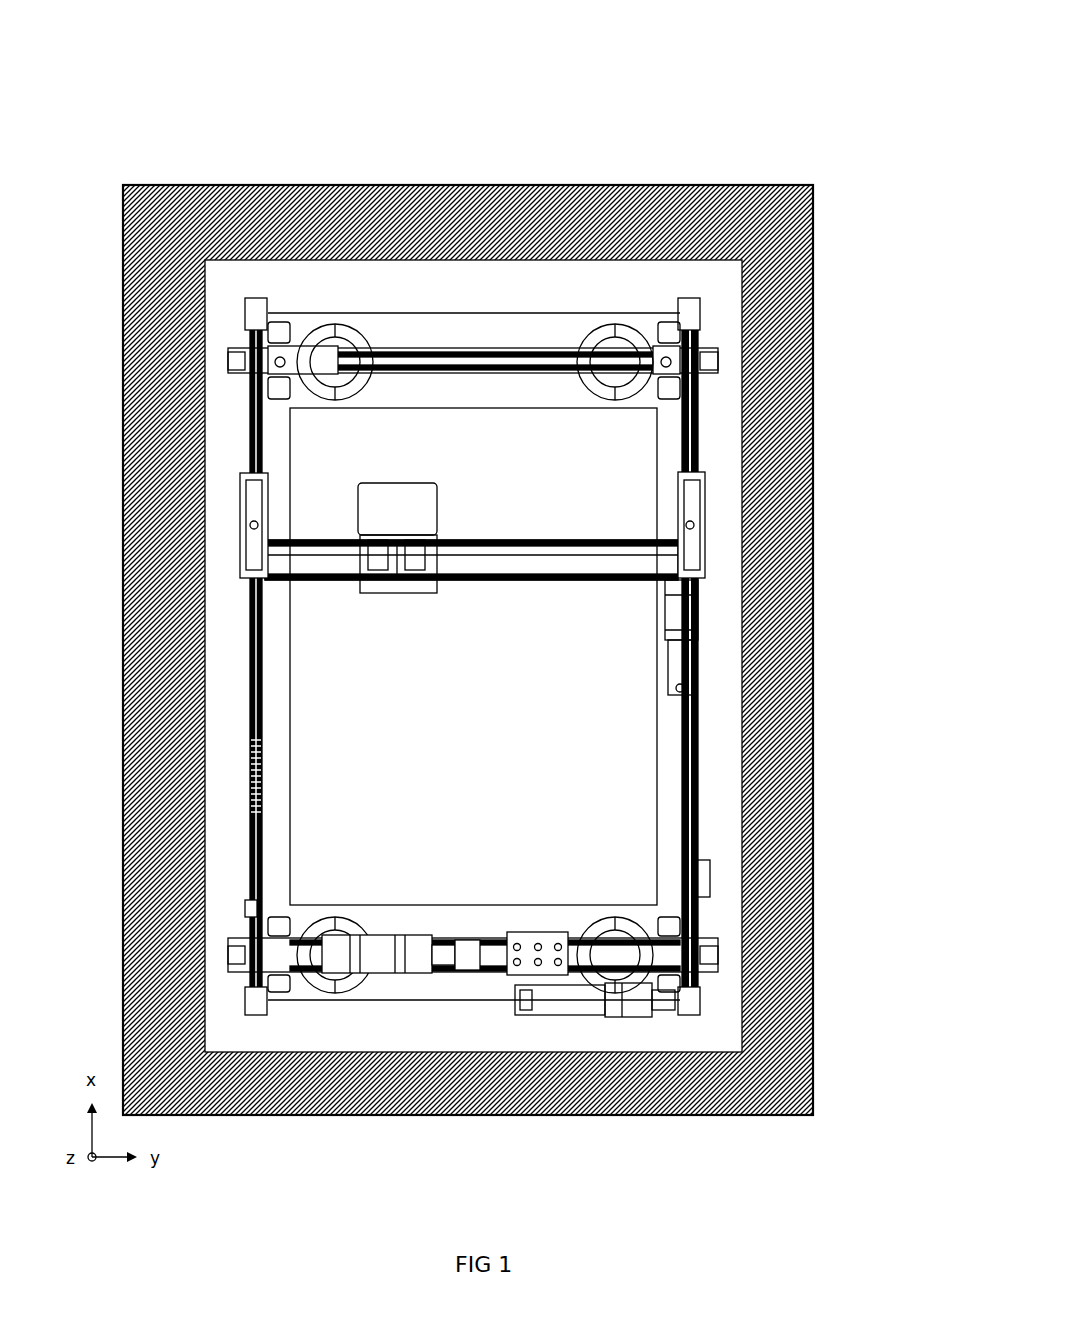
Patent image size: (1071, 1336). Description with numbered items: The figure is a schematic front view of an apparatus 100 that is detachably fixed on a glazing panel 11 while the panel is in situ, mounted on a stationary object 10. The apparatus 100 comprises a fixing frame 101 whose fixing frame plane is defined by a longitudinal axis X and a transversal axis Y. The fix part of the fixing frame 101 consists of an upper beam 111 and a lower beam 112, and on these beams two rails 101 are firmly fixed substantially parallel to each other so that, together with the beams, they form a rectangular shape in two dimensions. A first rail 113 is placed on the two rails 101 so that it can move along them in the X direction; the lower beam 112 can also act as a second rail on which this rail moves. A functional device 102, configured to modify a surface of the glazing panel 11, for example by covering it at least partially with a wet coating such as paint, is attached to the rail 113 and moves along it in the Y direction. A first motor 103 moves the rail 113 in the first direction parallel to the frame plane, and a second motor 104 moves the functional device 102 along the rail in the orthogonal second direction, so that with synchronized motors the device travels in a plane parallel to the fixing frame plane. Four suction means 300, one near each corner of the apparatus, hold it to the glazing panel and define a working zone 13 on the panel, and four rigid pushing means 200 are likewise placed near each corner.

The apparatus 100 is at (818, 75).
The stationary object 10 is at (775, 200).
The glazing panel 11 is at (722, 325).
The working zone 13 is at (640, 460).
The fixing frame 101 is at (700, 745).
The upper beam 111 is at (305, 357).
The first rail 113 is at (325, 565).
The functional device 102 is at (393, 512).
The second motor 104 is at (683, 615).
The lower beam 112 is at (523, 1012).
The first motor 103 is at (592, 1005).
The rigid pushing means 200 is at (655, 322).
The suction means 300 is at (603, 340).